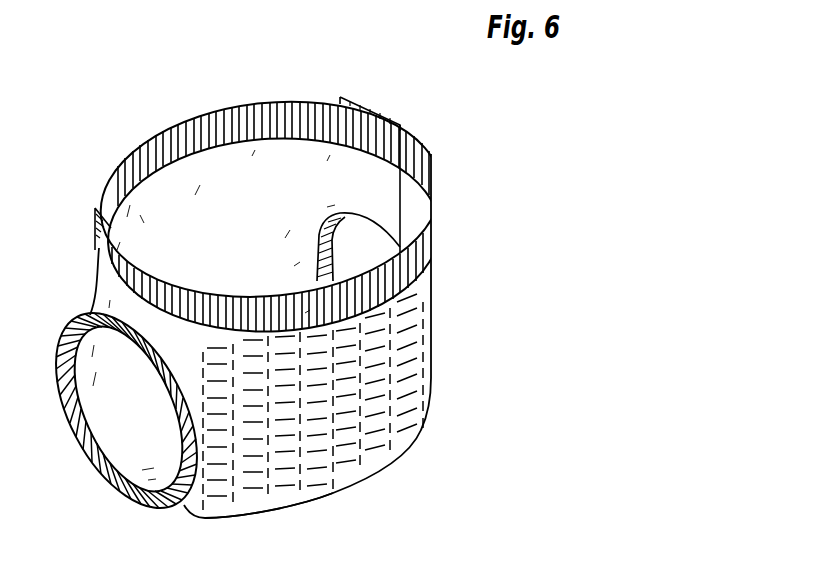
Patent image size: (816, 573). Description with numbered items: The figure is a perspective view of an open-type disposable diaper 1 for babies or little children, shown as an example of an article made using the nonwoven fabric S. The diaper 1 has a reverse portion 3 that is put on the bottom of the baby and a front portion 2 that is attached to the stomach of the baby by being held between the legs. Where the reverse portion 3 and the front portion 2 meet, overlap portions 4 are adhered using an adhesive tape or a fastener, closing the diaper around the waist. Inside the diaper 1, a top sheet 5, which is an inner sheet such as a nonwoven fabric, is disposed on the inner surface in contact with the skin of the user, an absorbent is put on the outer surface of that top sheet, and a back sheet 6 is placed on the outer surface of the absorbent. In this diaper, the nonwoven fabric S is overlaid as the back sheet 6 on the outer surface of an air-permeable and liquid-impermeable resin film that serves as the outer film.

The disposable diaper 1 is at (462, 238).
The front portion 2 is at (247, 162).
The reverse portion 3 is at (403, 380).
The overlap portions 4 is at (365, 107).
The top sheet 5 is at (183, 188).
The back sheet 6 is at (347, 475).
The nonwoven fabric S is at (287, 470).